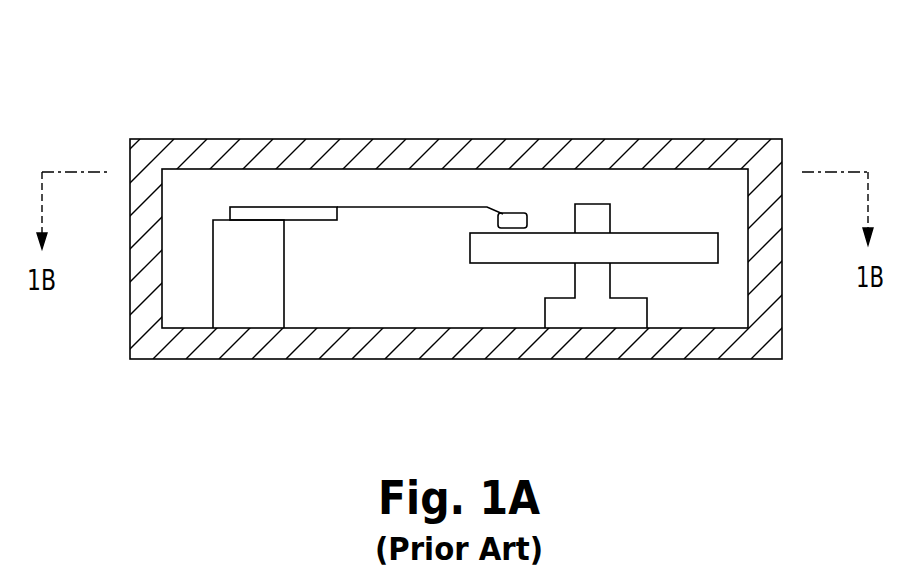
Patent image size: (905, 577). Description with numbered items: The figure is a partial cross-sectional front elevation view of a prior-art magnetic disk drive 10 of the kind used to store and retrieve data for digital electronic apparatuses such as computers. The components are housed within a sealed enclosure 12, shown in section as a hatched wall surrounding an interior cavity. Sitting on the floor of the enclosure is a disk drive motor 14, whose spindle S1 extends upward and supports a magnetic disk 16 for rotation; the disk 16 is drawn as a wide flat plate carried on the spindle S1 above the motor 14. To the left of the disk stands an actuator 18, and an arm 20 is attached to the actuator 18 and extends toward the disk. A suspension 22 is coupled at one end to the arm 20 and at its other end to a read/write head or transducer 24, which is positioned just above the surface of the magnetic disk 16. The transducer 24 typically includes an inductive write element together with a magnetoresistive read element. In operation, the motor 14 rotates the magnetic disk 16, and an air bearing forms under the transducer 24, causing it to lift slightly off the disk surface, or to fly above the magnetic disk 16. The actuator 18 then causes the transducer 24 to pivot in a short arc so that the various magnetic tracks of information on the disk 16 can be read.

The magnetic disk drive 10 is at (728, 85).
The sealed enclosure 12 is at (470, 360).
The disk drive motor 14 is at (620, 314).
The magnetic disk 16 is at (650, 237).
The actuator 18 is at (268, 285).
The arm 20 is at (297, 210).
The suspension 22 is at (412, 209).
The read/write head or transducer 24 is at (512, 215).
The spindle S1 is at (596, 213).